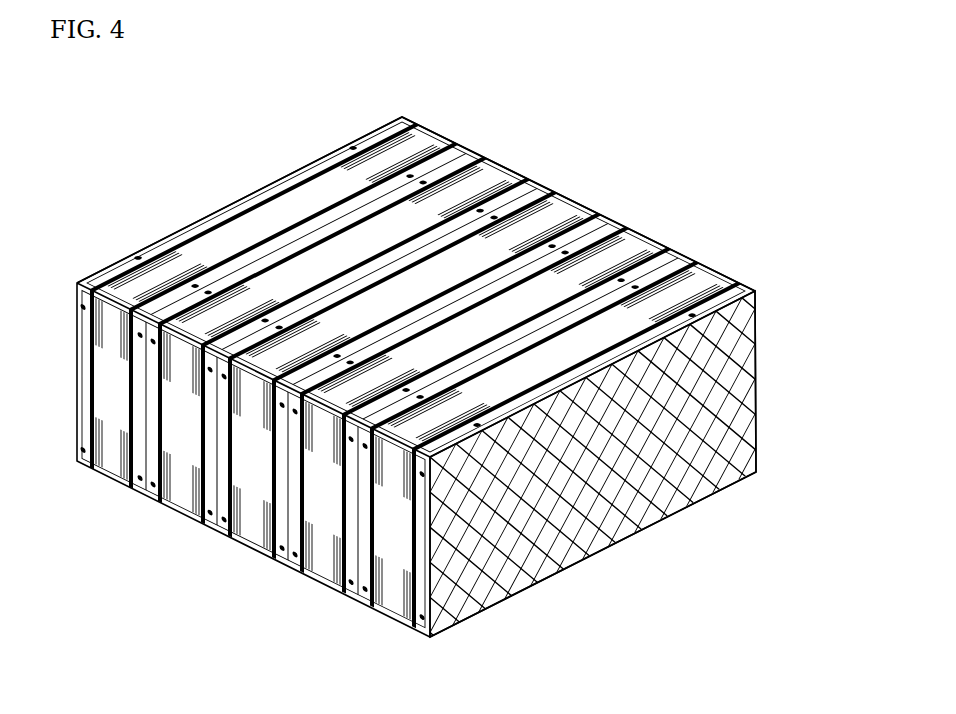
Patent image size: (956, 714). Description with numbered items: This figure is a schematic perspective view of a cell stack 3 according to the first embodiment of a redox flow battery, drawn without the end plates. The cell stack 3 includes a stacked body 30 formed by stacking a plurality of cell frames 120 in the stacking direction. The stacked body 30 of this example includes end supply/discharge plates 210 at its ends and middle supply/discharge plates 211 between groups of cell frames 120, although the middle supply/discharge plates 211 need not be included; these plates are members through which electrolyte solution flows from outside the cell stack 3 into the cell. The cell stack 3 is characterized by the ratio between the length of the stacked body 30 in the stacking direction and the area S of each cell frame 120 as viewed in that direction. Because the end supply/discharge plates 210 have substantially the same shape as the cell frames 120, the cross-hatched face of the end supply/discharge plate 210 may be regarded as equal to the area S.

The cell stack 3 is at (648, 178).
The stacked body 30 is at (743, 263).
The end supply/discharge plate 210 is at (190, 227).
The cell frame 120 is at (335, 560).
The middle supply/discharge plate 211 is at (282, 513).
The area of cell frame S is at (623, 513).